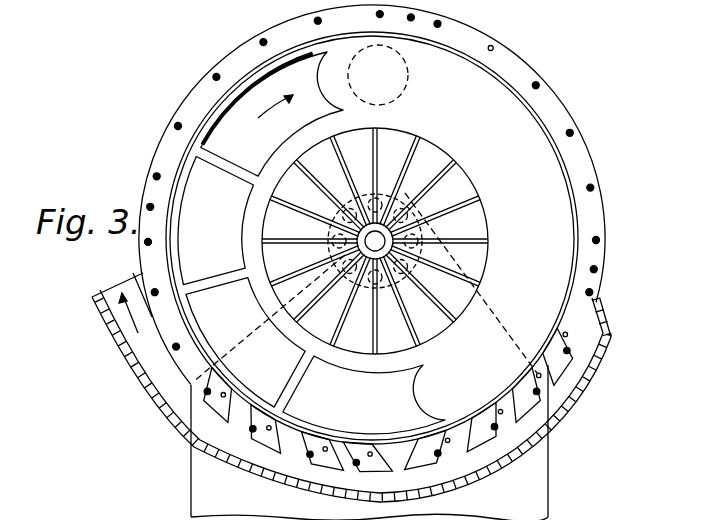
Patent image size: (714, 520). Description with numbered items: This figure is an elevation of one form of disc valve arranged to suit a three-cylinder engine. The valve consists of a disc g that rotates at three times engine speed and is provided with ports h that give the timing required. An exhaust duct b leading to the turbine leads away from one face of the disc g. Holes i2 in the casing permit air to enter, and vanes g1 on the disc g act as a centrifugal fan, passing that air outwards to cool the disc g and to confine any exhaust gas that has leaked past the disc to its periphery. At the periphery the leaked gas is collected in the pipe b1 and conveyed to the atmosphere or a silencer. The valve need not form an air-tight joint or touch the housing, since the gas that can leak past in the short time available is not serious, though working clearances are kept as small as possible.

The disc g is at (492, 93).
The vanes g1 is at (455, 178).
The ports h is at (223, 138).
The exhaust duct b is at (378, 76).
The pipe b1 is at (170, 392).
The holes i2 is at (413, 213).